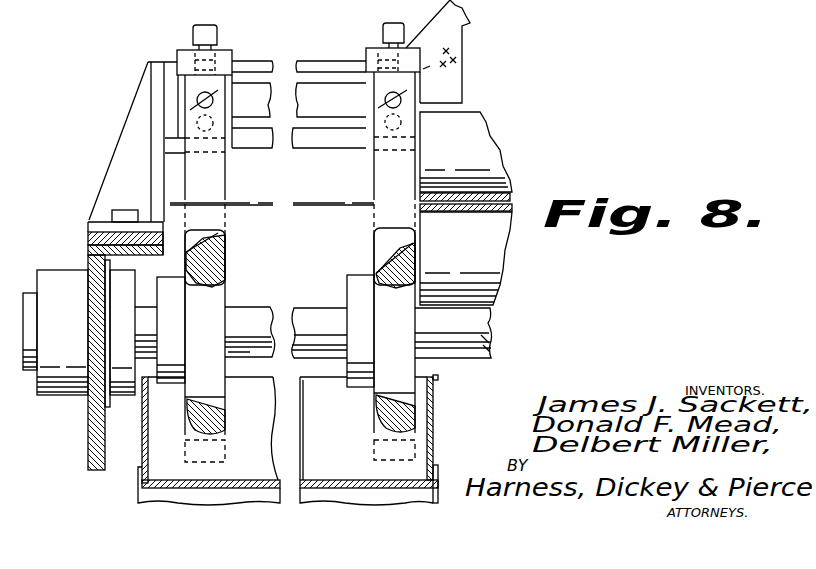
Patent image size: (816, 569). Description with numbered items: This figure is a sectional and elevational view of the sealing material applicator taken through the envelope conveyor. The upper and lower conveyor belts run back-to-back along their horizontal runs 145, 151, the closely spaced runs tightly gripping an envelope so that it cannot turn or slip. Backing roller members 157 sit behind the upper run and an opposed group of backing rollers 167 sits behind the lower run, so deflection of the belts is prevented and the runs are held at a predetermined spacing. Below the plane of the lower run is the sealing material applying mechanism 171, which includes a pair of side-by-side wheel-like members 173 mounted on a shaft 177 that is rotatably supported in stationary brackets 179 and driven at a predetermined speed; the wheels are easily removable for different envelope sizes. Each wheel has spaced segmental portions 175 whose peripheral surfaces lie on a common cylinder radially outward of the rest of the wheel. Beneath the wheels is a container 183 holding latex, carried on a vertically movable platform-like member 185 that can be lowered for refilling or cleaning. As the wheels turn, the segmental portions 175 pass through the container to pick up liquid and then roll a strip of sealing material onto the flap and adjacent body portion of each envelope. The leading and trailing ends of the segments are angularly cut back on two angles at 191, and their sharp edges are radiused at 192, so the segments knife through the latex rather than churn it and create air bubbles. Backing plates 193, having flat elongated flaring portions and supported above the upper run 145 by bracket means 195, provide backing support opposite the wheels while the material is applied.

The horizontal run 145 is at (495, 191).
The horizontal run 151 is at (510, 206).
The backing roller members 157 is at (488, 137).
The backing rollers 167 is at (480, 279).
The sealing material applying mechanism 171 is at (424, 253).
The wheel-like members 173 is at (213, 289).
The segmental portions 175 is at (224, 240).
The shaft 177 is at (317, 310).
The stationary brackets 179 is at (95, 443).
The container 183 is at (435, 393).
The platform-like member 185 is at (425, 499).
The angularly cut back ends 191 is at (210, 232).
The radiused edges 192 is at (380, 247).
The backing plates 193 is at (213, 177).
The bracket means 195 is at (365, 62).